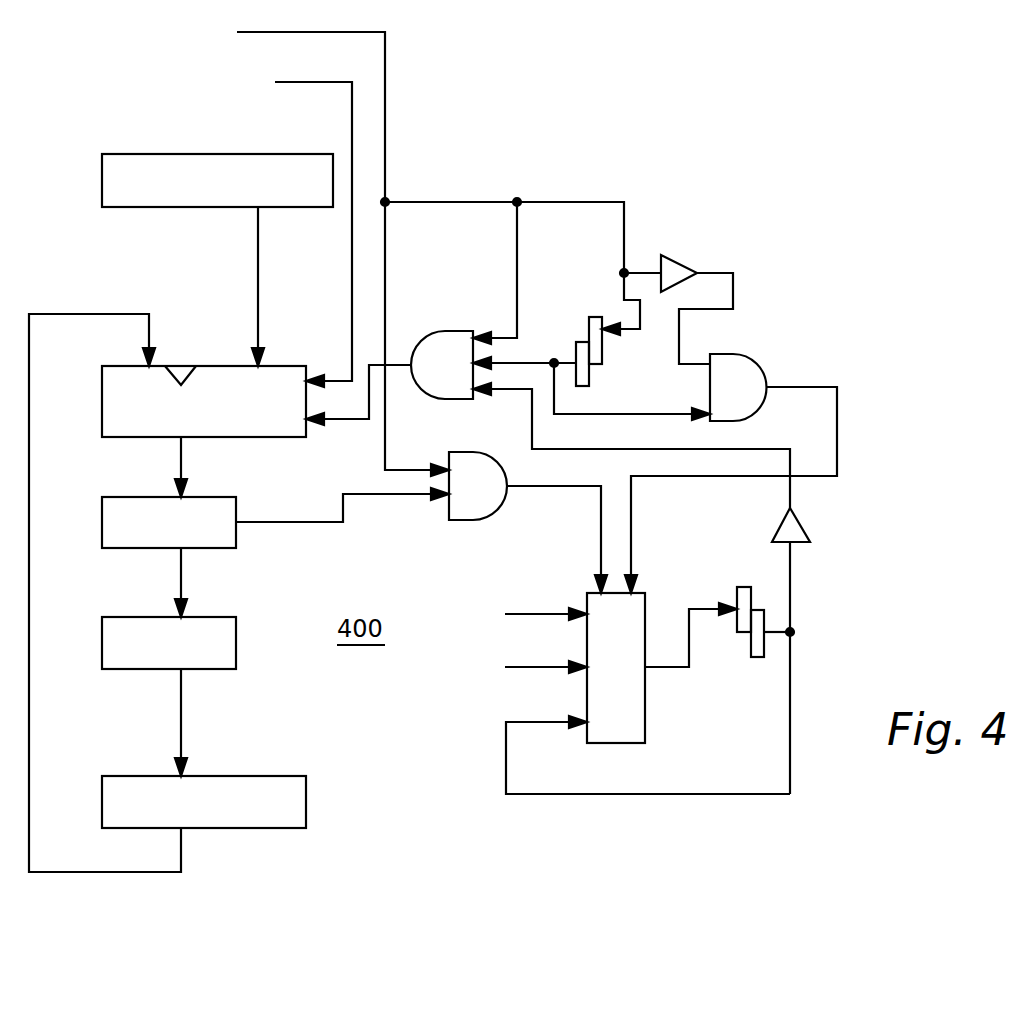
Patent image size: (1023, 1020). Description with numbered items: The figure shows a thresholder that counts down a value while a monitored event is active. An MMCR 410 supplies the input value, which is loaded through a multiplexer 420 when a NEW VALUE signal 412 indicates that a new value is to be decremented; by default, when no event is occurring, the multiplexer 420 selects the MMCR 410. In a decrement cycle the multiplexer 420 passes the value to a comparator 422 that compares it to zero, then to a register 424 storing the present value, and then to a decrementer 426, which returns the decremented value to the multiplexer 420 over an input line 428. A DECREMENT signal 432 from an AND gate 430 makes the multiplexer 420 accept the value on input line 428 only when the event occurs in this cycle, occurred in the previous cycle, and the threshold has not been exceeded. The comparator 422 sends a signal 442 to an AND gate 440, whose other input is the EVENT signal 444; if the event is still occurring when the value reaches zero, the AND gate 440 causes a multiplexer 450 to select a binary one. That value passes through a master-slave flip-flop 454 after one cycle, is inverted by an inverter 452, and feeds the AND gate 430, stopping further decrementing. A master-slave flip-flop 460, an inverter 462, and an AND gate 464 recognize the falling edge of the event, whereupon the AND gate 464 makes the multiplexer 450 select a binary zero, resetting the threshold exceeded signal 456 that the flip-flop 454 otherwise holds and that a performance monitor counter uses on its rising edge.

The MMCR 410 is at (158, 154).
The NEW VALUE signal 412 is at (352, 104).
The multiplexer 420 is at (218, 366).
The comparator 422 is at (214, 548).
The register 424 is at (213, 669).
The decrementer 426 is at (245, 828).
The input line 428 is at (85, 314).
The AND gate 430 is at (458, 331).
The DECREMENT signal 432 is at (331, 418).
The AND gate 440 is at (455, 520).
The signal 442 is at (317, 522).
The EVENT signal 444 is at (386, 90).
The multiplexer 450 is at (645, 715).
The inverter 452 is at (800, 525).
The master-slave flip-flop 454 is at (757, 657).
The threshold exceeded signal 456 is at (732, 794).
The master-slave flip-flop 460 is at (594, 317).
The inverter 462 is at (676, 264).
The AND gate 464 is at (745, 354).